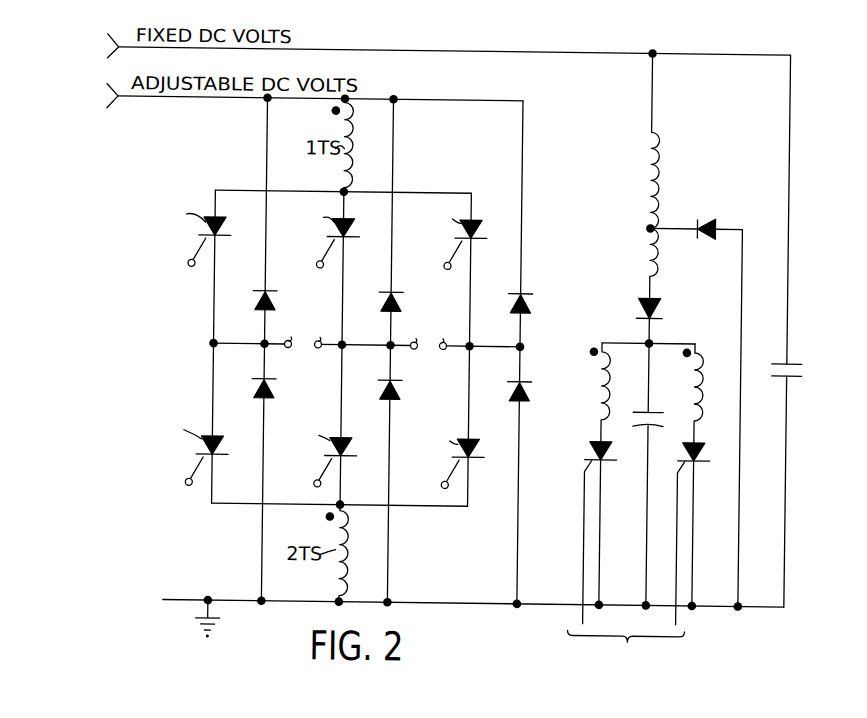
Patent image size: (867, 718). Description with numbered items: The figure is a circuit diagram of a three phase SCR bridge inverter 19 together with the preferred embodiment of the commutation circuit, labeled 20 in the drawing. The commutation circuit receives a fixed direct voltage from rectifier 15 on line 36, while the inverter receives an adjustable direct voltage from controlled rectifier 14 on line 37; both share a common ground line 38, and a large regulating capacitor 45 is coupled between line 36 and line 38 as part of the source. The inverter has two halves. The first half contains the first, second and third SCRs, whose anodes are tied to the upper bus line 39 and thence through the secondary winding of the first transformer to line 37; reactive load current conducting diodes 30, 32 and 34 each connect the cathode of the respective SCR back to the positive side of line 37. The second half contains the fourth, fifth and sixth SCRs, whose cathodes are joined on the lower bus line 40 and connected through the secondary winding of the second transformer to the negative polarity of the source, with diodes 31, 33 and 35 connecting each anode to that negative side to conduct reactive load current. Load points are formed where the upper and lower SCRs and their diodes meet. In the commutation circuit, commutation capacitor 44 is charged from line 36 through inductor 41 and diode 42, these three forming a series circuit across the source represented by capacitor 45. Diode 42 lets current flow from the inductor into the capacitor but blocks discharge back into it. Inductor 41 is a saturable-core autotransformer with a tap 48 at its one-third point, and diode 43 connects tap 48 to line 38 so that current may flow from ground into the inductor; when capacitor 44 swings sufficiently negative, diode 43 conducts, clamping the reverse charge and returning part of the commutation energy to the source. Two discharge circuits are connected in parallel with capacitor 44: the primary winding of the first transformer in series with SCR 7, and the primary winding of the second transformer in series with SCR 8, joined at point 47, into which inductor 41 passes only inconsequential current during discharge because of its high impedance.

The silicon controlled rectifier 7 is at (607, 443).
The silicon controlled rectifier 8 is at (700, 443).
The controlled rectifier 14 is at (83, 90).
The rectifier 15 is at (83, 43).
The inverter 19 is at (377, 431).
The commutation circuit 20 is at (649, 491).
The reactive load current conducting diode 30 is at (277, 303).
The diode 31 is at (277, 392).
The reactive load current conducting diode 32 is at (403, 303).
The diode 33 is at (403, 392).
The reactive load current conducting diode 34 is at (532, 305).
The diode 35 is at (532, 395).
The line 36 is at (413, 52).
The line 37 is at (412, 100).
The common ground line 38 is at (430, 603).
The positive inverter bus 39 is at (415, 193).
The negative inverter bus 40 is at (414, 507).
The inductor 41 is at (649, 166).
The diode 42 is at (644, 302).
The diode 43 is at (699, 221).
The commutation capacitor 44 is at (653, 425).
The capacitor 45 is at (784, 362).
The point 47 is at (655, 340).
The tap 48 is at (645, 227).